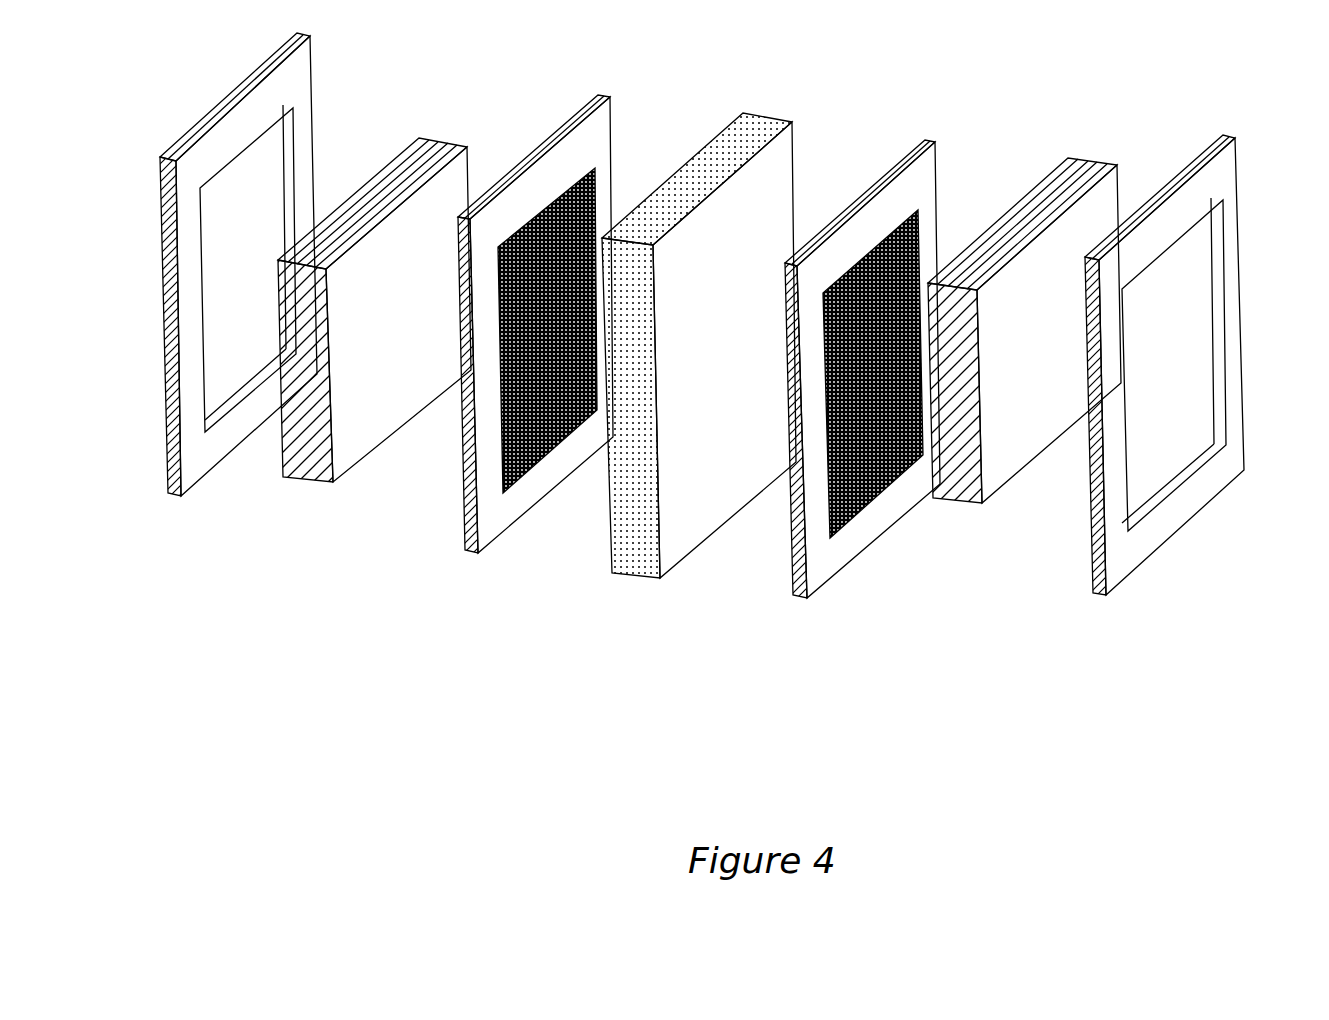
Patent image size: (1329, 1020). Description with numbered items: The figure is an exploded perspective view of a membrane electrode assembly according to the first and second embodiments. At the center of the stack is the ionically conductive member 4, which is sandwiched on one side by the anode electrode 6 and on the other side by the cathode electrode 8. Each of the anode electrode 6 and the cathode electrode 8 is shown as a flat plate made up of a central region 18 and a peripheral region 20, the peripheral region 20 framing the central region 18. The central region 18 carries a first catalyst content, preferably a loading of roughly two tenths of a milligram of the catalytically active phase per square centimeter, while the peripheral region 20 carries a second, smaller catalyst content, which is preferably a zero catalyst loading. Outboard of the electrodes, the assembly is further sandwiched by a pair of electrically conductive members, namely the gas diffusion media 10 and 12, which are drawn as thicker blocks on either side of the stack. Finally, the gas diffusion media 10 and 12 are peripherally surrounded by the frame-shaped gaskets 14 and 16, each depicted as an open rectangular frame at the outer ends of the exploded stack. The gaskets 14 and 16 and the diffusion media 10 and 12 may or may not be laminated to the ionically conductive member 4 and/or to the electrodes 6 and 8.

The ionically conductive member 4 is at (755, 122).
The anode electrode 6 is at (896, 336).
The cathode electrode 8 is at (572, 295).
The gas diffusion medium 10 is at (1093, 163).
The gas diffusion medium 12 is at (435, 148).
The frame-shaped gasket 14 is at (1229, 196).
The frame-shaped gasket 16 is at (307, 97).
The central region 18 is at (528, 450).
The peripheral region 20 is at (607, 158).